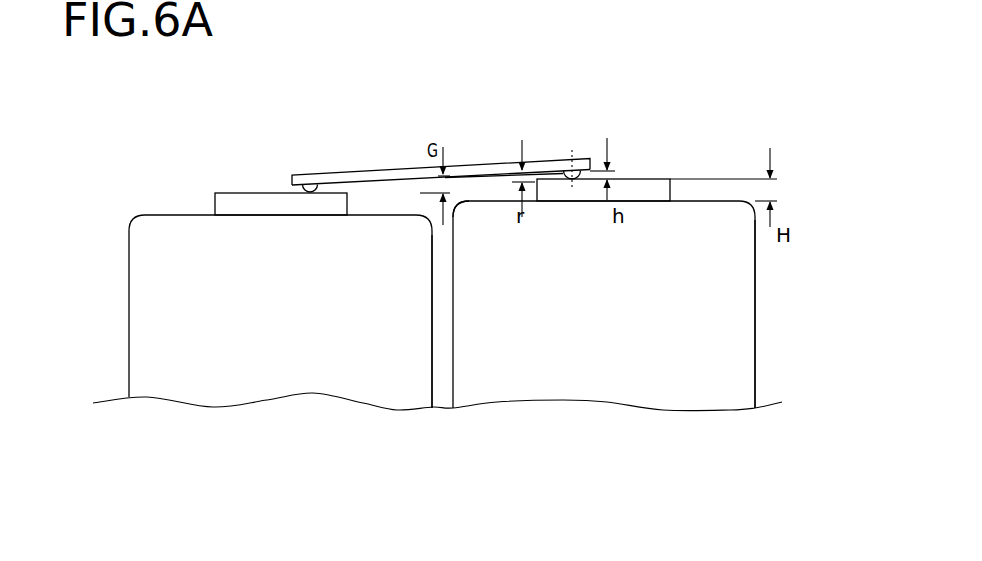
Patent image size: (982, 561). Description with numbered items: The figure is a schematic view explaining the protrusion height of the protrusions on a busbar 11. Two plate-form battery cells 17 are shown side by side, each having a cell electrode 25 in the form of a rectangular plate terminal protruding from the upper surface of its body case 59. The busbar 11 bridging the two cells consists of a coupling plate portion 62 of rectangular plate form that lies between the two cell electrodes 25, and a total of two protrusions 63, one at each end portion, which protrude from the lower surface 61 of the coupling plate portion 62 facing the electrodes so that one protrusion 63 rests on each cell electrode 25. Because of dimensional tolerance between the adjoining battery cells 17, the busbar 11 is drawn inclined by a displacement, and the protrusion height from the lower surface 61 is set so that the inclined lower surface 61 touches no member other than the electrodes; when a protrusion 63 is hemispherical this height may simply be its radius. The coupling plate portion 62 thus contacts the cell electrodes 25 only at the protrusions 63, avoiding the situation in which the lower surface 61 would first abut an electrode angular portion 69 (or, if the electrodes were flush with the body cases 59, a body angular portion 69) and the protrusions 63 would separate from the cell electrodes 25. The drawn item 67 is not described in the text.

The busbar 11 is at (429, 182).
The battery cell 17 is at (264, 385).
The cell electrode 25 is at (215, 203).
The body case 59 is at (432, 365).
The lower surface 61 is at (340, 184).
The coupling plate portion 62 is at (463, 165).
The protrusion 63 is at (302, 187).
The inclined portion 67 is at (536, 171).
The electrode angular portion 69 is at (462, 198).